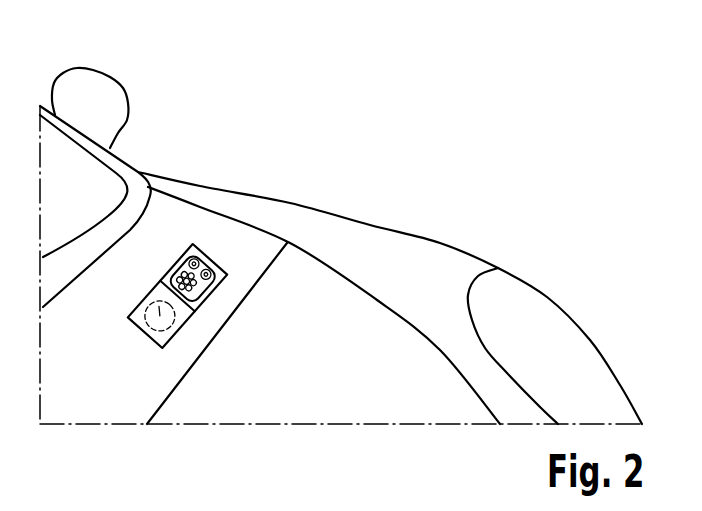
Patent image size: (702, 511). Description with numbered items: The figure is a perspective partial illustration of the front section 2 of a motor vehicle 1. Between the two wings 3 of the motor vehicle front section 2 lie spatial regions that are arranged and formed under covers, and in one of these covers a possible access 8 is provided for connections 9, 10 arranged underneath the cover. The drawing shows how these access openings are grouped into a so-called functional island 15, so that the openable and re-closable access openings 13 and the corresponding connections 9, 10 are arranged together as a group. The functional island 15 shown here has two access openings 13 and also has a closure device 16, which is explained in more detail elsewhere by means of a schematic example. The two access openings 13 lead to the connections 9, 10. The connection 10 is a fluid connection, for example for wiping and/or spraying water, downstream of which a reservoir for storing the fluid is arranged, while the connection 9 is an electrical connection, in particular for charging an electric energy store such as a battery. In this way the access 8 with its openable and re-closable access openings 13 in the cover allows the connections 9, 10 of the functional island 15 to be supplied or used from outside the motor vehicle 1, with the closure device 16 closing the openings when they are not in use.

The motor vehicle 1 is at (366, 91).
The motor vehicle front section 2 is at (503, 228).
The wing 3 is at (440, 264).
The access 8 is at (192, 243).
The connection 9 is at (193, 244).
The connection 10 is at (155, 333).
The openable and re-closable access opening 13 is at (214, 308).
The functional island 15 is at (128, 333).
The closure device 16 is at (172, 265).